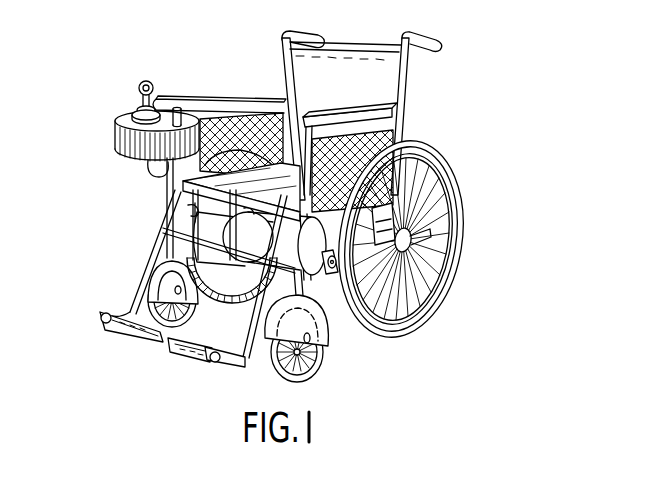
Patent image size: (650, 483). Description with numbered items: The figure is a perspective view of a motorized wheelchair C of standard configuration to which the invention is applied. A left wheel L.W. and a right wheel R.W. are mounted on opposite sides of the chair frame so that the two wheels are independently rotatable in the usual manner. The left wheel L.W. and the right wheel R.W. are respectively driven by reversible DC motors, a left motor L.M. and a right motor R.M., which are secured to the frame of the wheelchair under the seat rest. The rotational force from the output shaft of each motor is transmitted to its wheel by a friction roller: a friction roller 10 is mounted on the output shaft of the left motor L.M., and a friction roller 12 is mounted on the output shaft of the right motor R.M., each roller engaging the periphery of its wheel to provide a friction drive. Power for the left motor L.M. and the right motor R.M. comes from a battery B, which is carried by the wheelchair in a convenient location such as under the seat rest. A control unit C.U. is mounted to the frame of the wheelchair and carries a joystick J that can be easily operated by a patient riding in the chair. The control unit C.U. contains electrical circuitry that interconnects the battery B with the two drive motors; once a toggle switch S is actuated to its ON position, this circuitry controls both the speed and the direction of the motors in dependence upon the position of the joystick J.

The wheelchair C is at (522, 63).
The control unit C.U. is at (113, 129).
The joystick J is at (151, 84).
The toggle switch S is at (168, 124).
The right wheel R.W. is at (202, 158).
The left wheel L.W. is at (450, 167).
The right motor R.M. is at (214, 229).
The left motor L.M. is at (262, 264).
The battery B is at (381, 218).
The friction roller 12 is at (189, 212).
The friction roller 10 is at (326, 272).